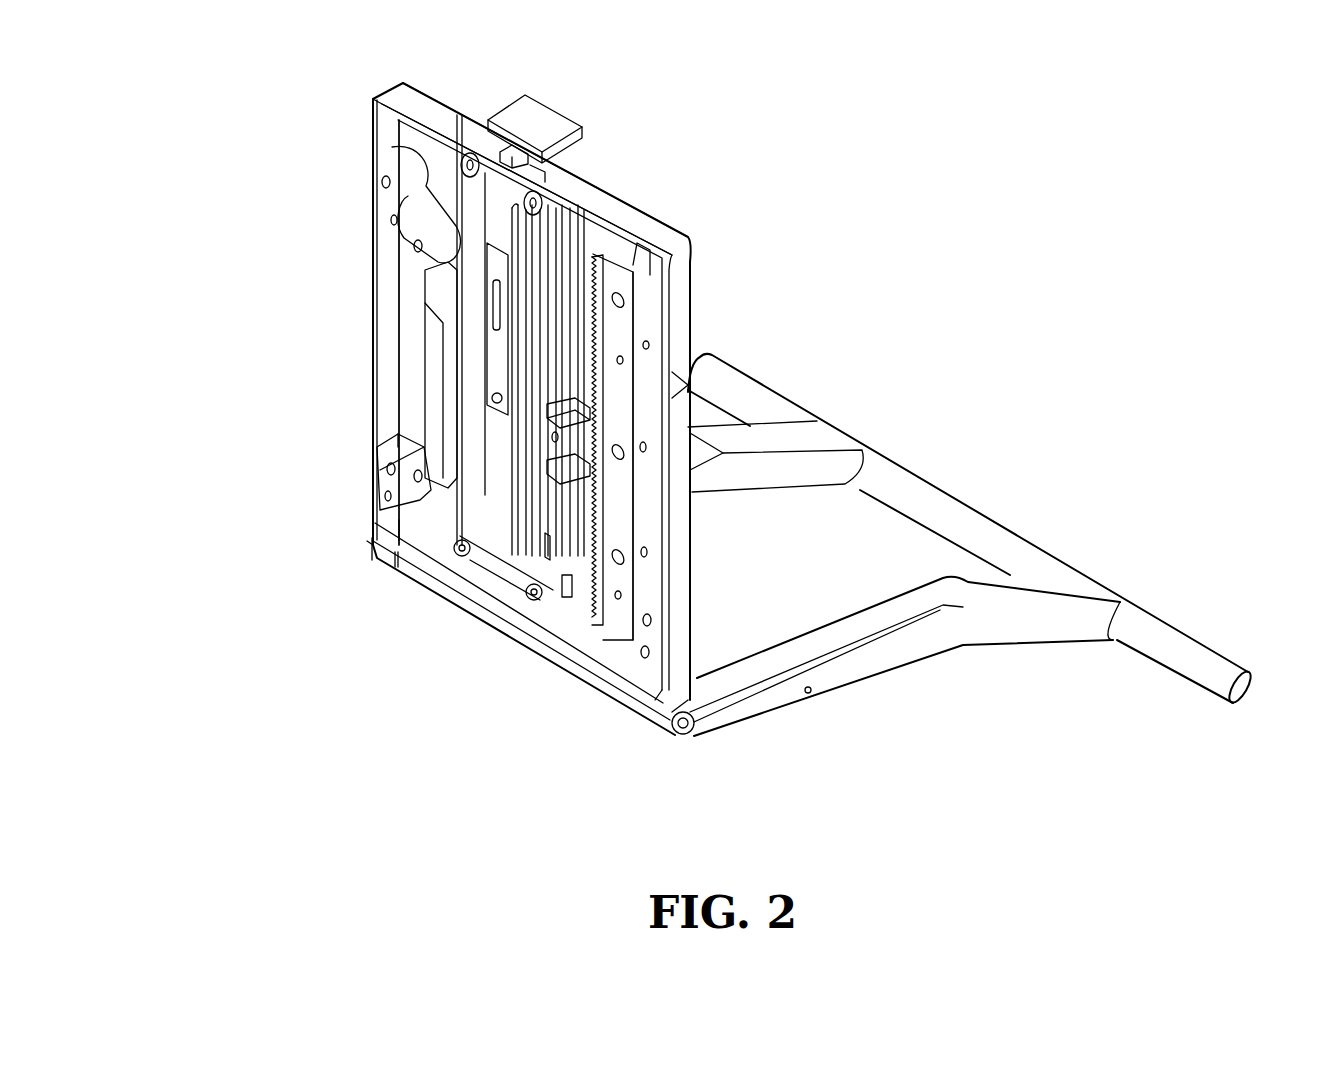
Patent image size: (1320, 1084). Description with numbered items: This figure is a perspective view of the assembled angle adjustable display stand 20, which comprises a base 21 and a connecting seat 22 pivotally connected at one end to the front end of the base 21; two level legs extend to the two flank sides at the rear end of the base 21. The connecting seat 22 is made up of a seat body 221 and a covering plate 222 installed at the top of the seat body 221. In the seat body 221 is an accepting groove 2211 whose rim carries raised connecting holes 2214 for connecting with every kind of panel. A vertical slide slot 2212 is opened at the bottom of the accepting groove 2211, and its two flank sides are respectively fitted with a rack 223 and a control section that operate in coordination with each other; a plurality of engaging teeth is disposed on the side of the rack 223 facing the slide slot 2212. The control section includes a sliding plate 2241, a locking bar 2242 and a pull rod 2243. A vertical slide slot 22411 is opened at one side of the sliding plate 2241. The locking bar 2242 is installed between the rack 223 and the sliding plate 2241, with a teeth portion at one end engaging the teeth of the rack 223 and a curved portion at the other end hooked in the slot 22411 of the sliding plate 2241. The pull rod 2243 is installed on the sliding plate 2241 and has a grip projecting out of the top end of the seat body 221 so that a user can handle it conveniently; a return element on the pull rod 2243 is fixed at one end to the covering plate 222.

The angle adjustable display stand 20 is at (300, 762).
The base 21 is at (1010, 521).
The connecting seat 22 is at (676, 235).
The seat body 221 is at (372, 352).
The accepting groove 2211 is at (410, 393).
The vertical slide slot 2212 is at (586, 226).
The raised connecting holes 2214 is at (383, 182).
The covering plate 222 is at (442, 287).
The rack 223 is at (623, 284).
The sliding plate 2241 is at (525, 354).
The locking bar 2242 is at (560, 447).
The vertical slide slot 22411 is at (556, 552).
The pull rod 2243 is at (555, 128).